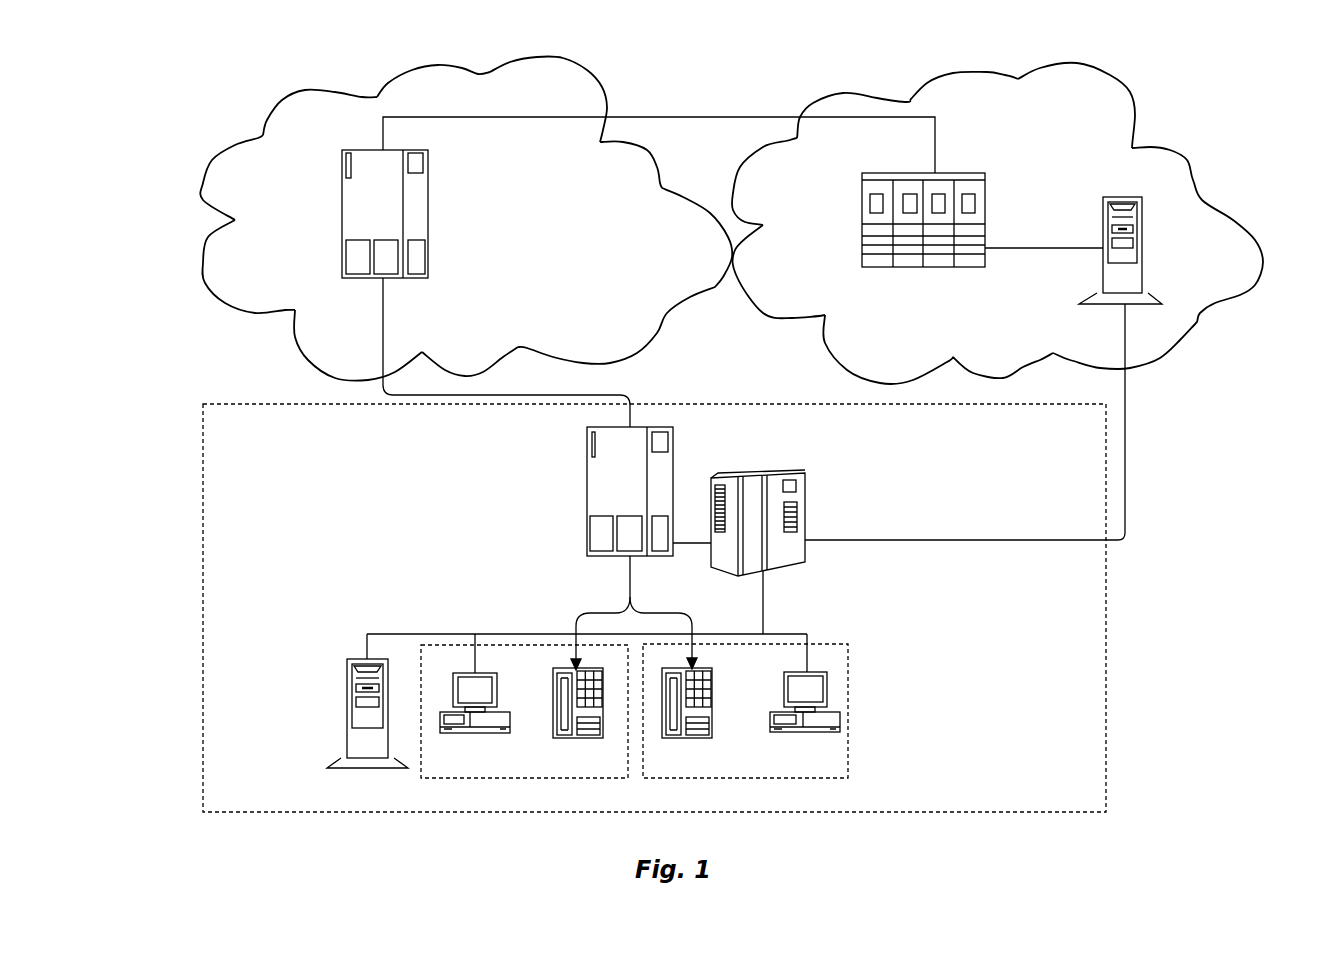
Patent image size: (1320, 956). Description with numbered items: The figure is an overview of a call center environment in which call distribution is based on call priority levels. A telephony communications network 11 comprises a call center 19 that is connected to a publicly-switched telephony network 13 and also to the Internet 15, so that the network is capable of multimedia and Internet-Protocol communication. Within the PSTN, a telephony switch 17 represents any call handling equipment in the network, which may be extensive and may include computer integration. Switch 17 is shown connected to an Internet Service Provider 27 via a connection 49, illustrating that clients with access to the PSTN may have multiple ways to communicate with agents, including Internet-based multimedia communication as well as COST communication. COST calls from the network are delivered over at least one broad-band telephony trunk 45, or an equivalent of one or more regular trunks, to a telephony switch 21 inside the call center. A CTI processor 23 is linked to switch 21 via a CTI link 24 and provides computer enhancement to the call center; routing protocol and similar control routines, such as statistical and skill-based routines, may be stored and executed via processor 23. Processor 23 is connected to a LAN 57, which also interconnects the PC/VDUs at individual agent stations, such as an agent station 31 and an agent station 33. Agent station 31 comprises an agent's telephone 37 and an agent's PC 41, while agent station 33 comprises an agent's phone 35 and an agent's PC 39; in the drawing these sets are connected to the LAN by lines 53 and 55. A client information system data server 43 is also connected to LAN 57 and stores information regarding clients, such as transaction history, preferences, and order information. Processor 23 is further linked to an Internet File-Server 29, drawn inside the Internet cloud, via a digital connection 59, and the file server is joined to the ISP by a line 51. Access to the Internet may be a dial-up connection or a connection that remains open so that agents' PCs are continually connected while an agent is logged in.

The telephony communications network 11 is at (1178, 107).
The publicly-switched telephony network 13 is at (208, 213).
The Internet 15 is at (1235, 325).
The telephony switch 17 is at (342, 233).
The call center 19 is at (1125, 553).
The telephony switch 21 is at (587, 513).
The CTI processor 23 is at (808, 527).
The CTI link 24 is at (697, 545).
The Internet Service Provider 27 is at (947, 173).
The Internet File-Server 29 is at (1103, 237).
The agent station 31 is at (848, 703).
The agent station 33 is at (503, 778).
The agent's phone 35 is at (553, 702).
The agent's telephone 37 is at (712, 693).
The agent's PC 39 is at (498, 732).
The agent's PC 41 is at (822, 732).
The client information system data server 43 is at (345, 720).
The broad-band telephony trunk 45 is at (382, 352).
The connection 49 is at (692, 117).
The router-to-computer link 51 is at (1070, 250).
The telephone lines from PBX 53 is at (617, 594).
The server-to-LAN connection 55 is at (762, 613).
The LAN 57 is at (470, 633).
The digital connection 59 is at (1057, 539).